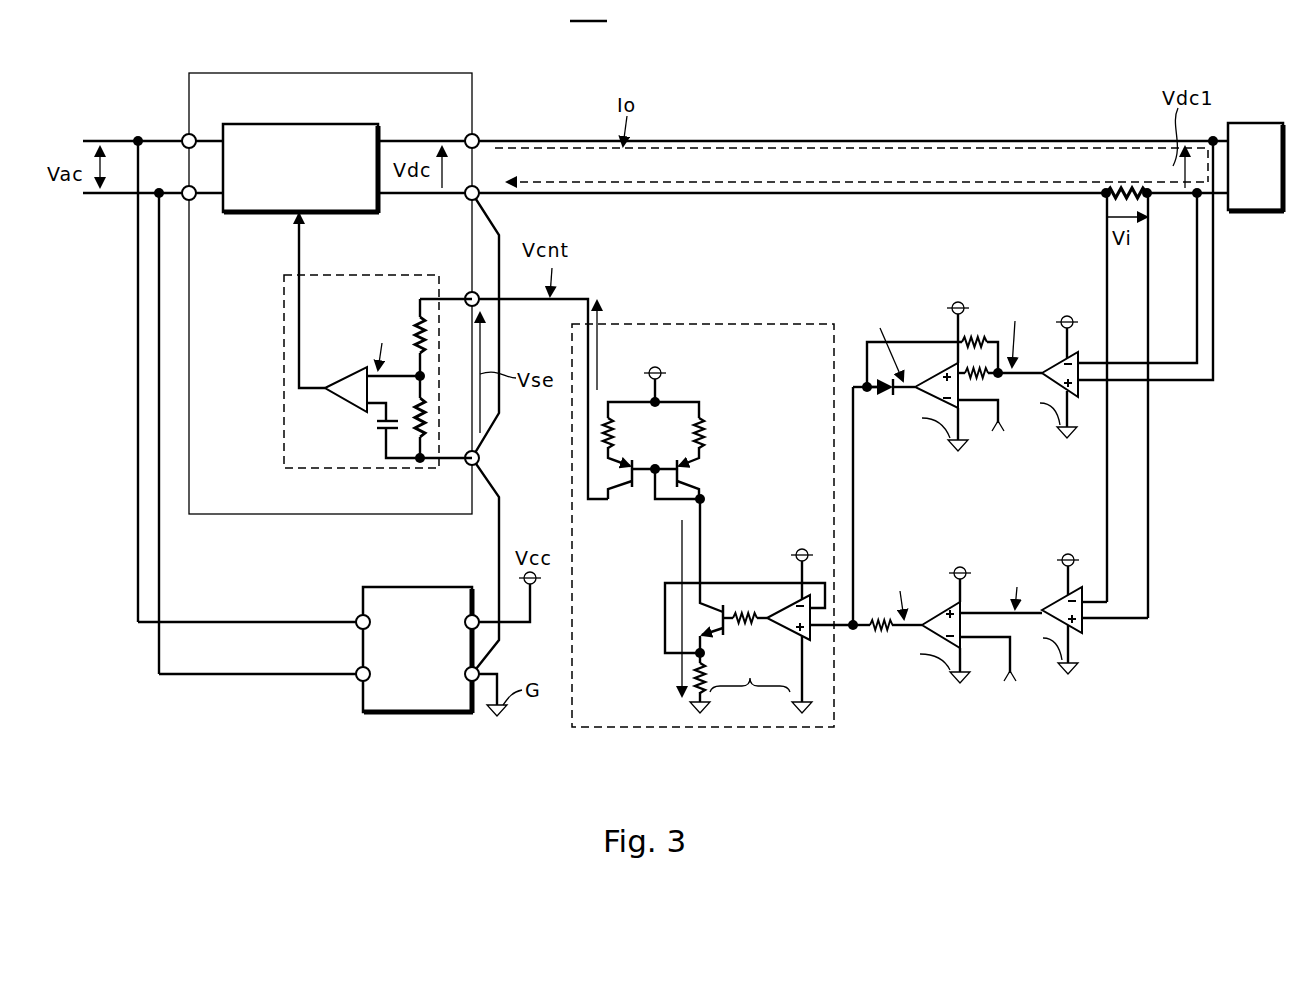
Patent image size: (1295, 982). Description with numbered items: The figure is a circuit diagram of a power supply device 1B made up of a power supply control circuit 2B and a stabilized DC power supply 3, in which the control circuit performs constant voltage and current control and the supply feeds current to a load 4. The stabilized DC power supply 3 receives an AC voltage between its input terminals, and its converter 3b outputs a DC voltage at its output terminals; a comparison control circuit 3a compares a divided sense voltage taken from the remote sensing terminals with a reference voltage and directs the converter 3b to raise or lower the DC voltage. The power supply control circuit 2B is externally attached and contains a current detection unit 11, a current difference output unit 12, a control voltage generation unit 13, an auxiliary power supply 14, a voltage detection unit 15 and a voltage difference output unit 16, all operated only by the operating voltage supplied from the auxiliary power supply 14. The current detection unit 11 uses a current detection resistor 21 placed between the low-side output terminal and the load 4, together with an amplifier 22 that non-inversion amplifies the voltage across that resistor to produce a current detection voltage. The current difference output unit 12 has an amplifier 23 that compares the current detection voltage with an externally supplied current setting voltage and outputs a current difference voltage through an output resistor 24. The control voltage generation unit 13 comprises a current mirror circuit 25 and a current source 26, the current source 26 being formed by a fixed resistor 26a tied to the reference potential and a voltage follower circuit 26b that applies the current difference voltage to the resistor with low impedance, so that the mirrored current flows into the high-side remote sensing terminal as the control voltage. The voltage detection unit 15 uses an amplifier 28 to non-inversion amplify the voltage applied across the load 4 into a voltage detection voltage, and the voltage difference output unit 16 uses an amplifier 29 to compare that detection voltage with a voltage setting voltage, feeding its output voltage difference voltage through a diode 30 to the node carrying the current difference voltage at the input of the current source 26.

The power supply device 1B is at (588, 10).
The power supply control circuit 2B is at (1158, 733).
The stabilized DC power supply 3 is at (403, 73).
The comparison control circuit 3a is at (357, 275).
The converter 3b is at (339, 124).
The load 4 is at (1255, 123).
The current detection unit 11 is at (1168, 675).
The current difference output unit 12 is at (987, 682).
The control voltage generation unit 13 is at (782, 324).
The auxiliary power supply 14 is at (420, 587).
The voltage detection unit 15 is at (1097, 440).
The voltage difference output unit 16 is at (1022, 458).
The current detection resistor 21 is at (1125, 188).
The amplifier 22 is at (1082, 627).
The amplifier 23 is at (940, 607).
The output resistor 24 is at (880, 630).
The current mirror circuit 25 is at (725, 432).
The current source 26 is at (752, 527).
The fixed resistor 26a is at (693, 670).
The voltage follower circuit 26b is at (780, 606).
The amplifier 28 is at (1062, 360).
The amplifier 29 is at (945, 370).
The diode 30 is at (887, 397).